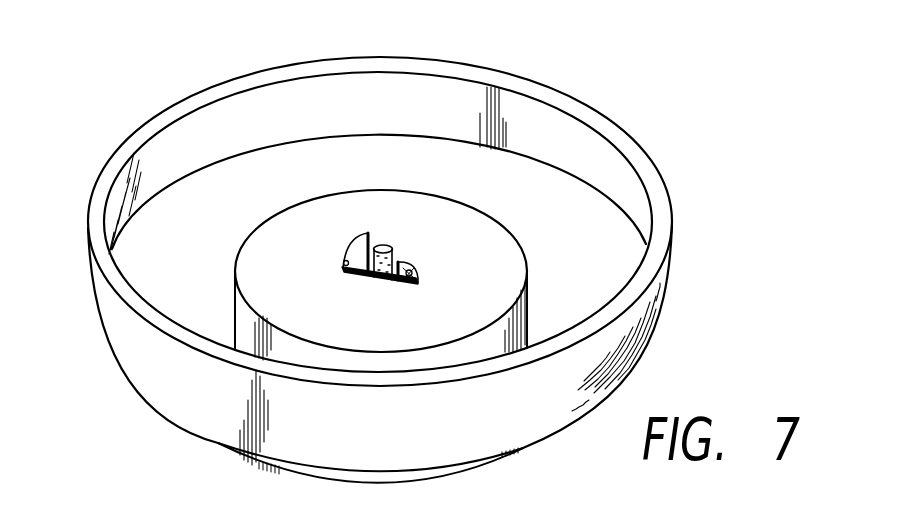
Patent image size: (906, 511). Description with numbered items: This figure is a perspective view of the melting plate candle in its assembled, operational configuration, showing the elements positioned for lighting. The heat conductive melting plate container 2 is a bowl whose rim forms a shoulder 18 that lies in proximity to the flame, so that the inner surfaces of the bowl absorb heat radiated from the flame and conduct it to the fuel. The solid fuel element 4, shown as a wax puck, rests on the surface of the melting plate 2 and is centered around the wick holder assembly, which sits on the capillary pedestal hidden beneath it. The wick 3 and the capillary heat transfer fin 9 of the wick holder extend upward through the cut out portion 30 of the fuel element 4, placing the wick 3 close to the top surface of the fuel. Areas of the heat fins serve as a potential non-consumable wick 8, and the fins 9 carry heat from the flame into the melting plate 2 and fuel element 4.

The shoulder 18 is at (627, 142).
The melting plate container 2 is at (502, 206).
The solid fuel element 4 is at (436, 300).
The cut out portion 30 is at (336, 190).
The wick 3 is at (386, 243).
The potential non-consumable wick 8 is at (367, 233).
The capillary heat fins 9 is at (419, 278).